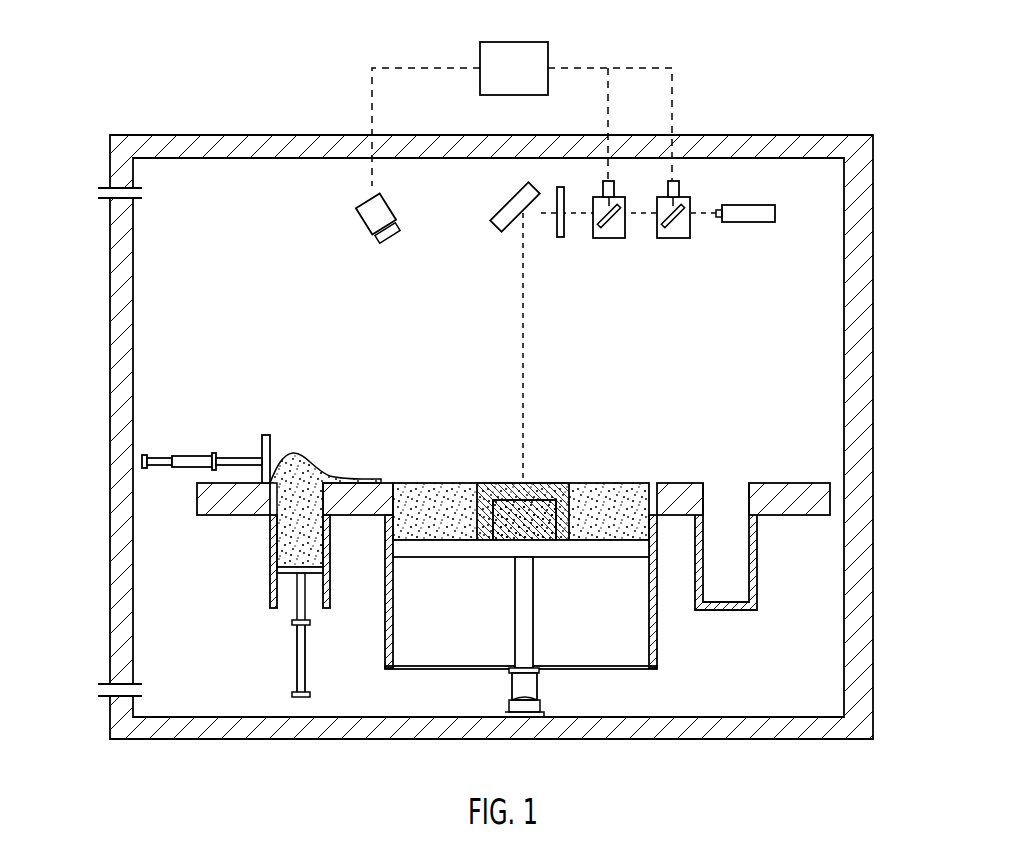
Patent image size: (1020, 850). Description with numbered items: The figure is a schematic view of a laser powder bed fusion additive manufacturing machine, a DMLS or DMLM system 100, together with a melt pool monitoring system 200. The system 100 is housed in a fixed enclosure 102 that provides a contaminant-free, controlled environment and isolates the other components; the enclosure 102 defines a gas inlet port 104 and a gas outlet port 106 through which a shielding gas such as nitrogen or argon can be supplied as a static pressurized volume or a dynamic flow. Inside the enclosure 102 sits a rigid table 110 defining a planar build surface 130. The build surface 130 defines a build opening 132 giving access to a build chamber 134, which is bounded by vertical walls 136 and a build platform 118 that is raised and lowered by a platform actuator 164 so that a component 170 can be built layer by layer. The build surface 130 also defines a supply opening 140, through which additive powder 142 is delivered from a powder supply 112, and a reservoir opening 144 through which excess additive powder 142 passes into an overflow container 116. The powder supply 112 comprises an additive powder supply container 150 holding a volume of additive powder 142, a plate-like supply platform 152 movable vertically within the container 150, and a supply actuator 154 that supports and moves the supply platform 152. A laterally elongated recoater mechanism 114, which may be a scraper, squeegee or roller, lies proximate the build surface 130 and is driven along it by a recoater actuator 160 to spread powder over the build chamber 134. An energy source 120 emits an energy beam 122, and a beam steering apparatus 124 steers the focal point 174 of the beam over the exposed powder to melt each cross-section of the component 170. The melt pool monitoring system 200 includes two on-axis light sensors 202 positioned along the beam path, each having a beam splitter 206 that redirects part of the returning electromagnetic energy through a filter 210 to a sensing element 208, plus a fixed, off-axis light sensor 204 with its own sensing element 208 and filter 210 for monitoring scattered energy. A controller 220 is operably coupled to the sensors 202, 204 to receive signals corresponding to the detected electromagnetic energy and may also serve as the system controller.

The DMLS or DMLM system 100 is at (97, 243).
The fixed enclosure 102 is at (310, 152).
The gas inlet port 104 is at (140, 195).
The gas outlet port 106 is at (140, 687).
The table 110 is at (775, 512).
The powder supply 112 is at (259, 572).
The recoater mechanism 114 is at (266, 434).
The overflow container 116 is at (697, 591).
The build platform 118 is at (423, 548).
The energy source 120 is at (761, 209).
The energy beam 122 is at (521, 347).
The beam steering apparatus 124 is at (506, 199).
The planar build surface 130 is at (774, 482).
The build opening 132 is at (642, 491).
The build chamber 134 is at (634, 630).
The vertical walls 136 is at (385, 620).
The supply opening 140 is at (320, 478).
The additive powder 142 is at (311, 462).
The reservoir opening 144 is at (750, 502).
The additive powder supply container 150 is at (334, 541).
The supply platform 152 is at (314, 573).
The supply actuator 154 is at (298, 658).
The recoater actuator 160 is at (192, 457).
The platform actuator 164 is at (533, 688).
The component 170 is at (487, 528).
The focal point 174 is at (521, 483).
The melt pool monitoring system 200 is at (641, 46).
The on-axis light sensor 202 is at (601, 187).
The off-axis light sensor 204 is at (358, 222).
The beam splitter 206 is at (612, 232).
The sensing element 208 is at (619, 200).
The filter 210 is at (562, 240).
The controller 220 is at (522, 114).